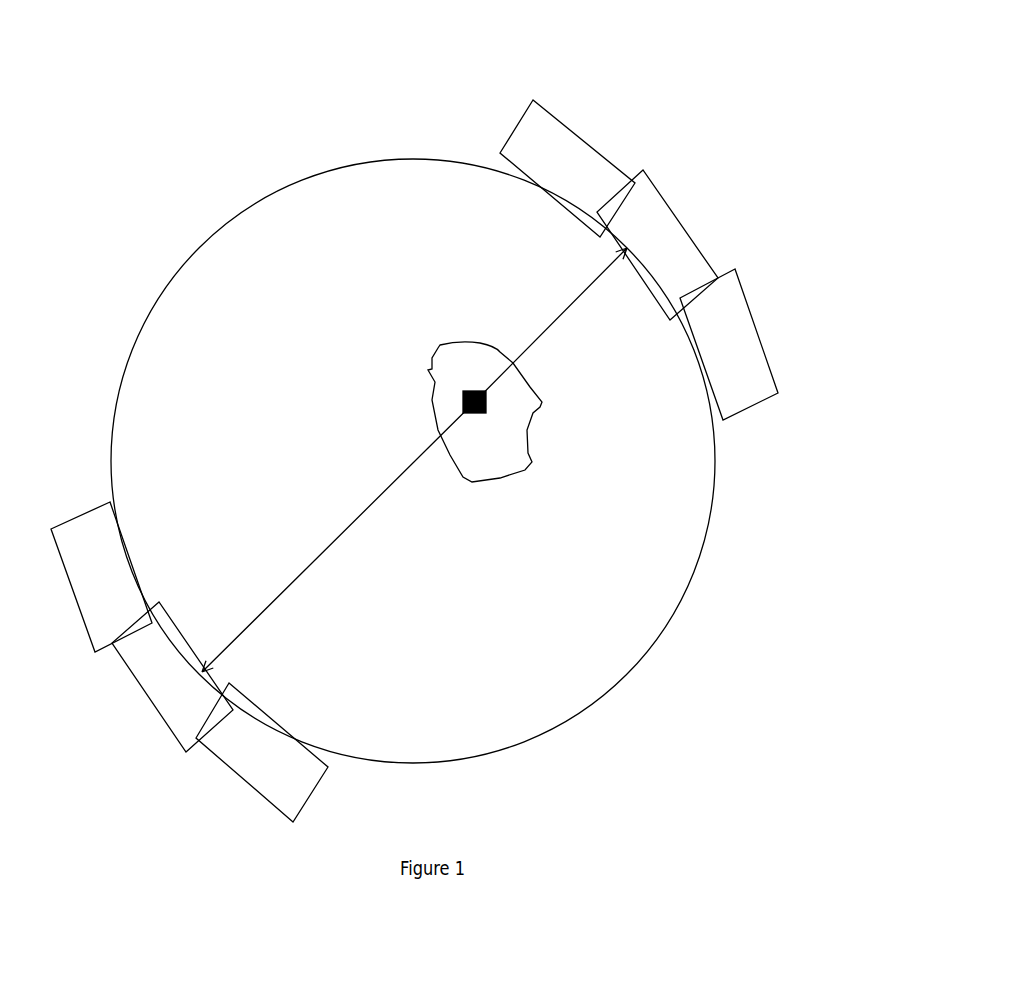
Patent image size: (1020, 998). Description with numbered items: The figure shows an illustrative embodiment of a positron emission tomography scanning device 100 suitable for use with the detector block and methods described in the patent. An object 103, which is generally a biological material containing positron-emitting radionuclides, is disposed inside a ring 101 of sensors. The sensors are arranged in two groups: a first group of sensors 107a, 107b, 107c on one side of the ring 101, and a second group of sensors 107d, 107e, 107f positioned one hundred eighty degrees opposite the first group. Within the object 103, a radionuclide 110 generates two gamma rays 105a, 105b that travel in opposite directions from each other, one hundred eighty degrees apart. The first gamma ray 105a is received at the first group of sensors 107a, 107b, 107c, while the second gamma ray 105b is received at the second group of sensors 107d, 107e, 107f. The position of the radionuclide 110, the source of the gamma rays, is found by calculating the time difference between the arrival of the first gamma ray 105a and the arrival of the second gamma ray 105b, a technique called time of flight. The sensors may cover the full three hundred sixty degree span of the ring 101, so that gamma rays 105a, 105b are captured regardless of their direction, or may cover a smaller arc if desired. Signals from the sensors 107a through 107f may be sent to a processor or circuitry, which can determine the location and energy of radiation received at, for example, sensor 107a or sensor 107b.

The positron emission tomography (PET) scanning device 100 is at (694, 55).
The ring 101 is at (323, 170).
The object 103 is at (453, 342).
The gamma ray 105a is at (553, 320).
The gamma ray 105b is at (302, 570).
The sensor 107a is at (573, 147).
The sensor 107b is at (657, 222).
The sensor 107c is at (745, 330).
The sensor 107d is at (260, 783).
The sensor 107e is at (168, 712).
The sensor 107f is at (77, 583).
The radionuclide 110 is at (480, 413).